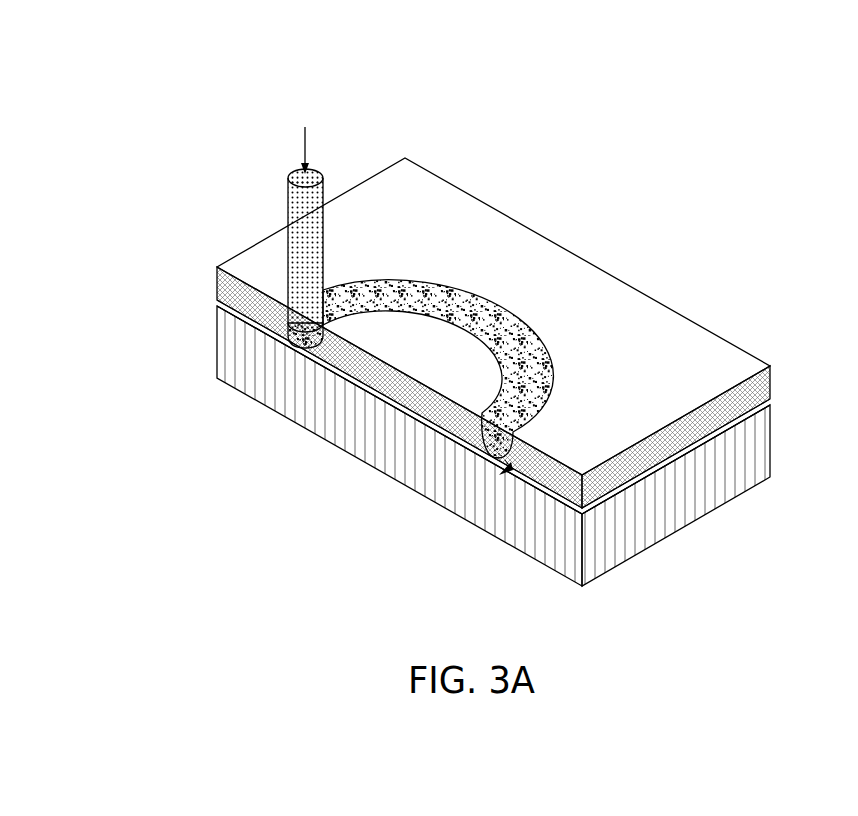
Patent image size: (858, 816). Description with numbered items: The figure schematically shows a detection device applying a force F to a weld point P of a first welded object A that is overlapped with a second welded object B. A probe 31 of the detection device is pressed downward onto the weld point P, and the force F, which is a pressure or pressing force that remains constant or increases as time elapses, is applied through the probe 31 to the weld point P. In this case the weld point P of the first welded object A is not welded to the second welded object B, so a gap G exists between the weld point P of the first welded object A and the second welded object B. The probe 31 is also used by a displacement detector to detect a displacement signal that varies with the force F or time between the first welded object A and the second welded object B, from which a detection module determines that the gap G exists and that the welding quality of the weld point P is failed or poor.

The probe 31 is at (288, 213).
The force F is at (305, 145).
The first welded object A is at (228, 283).
The second welded object B is at (228, 342).
The weld point P is at (298, 338).
The gap G is at (582, 513).